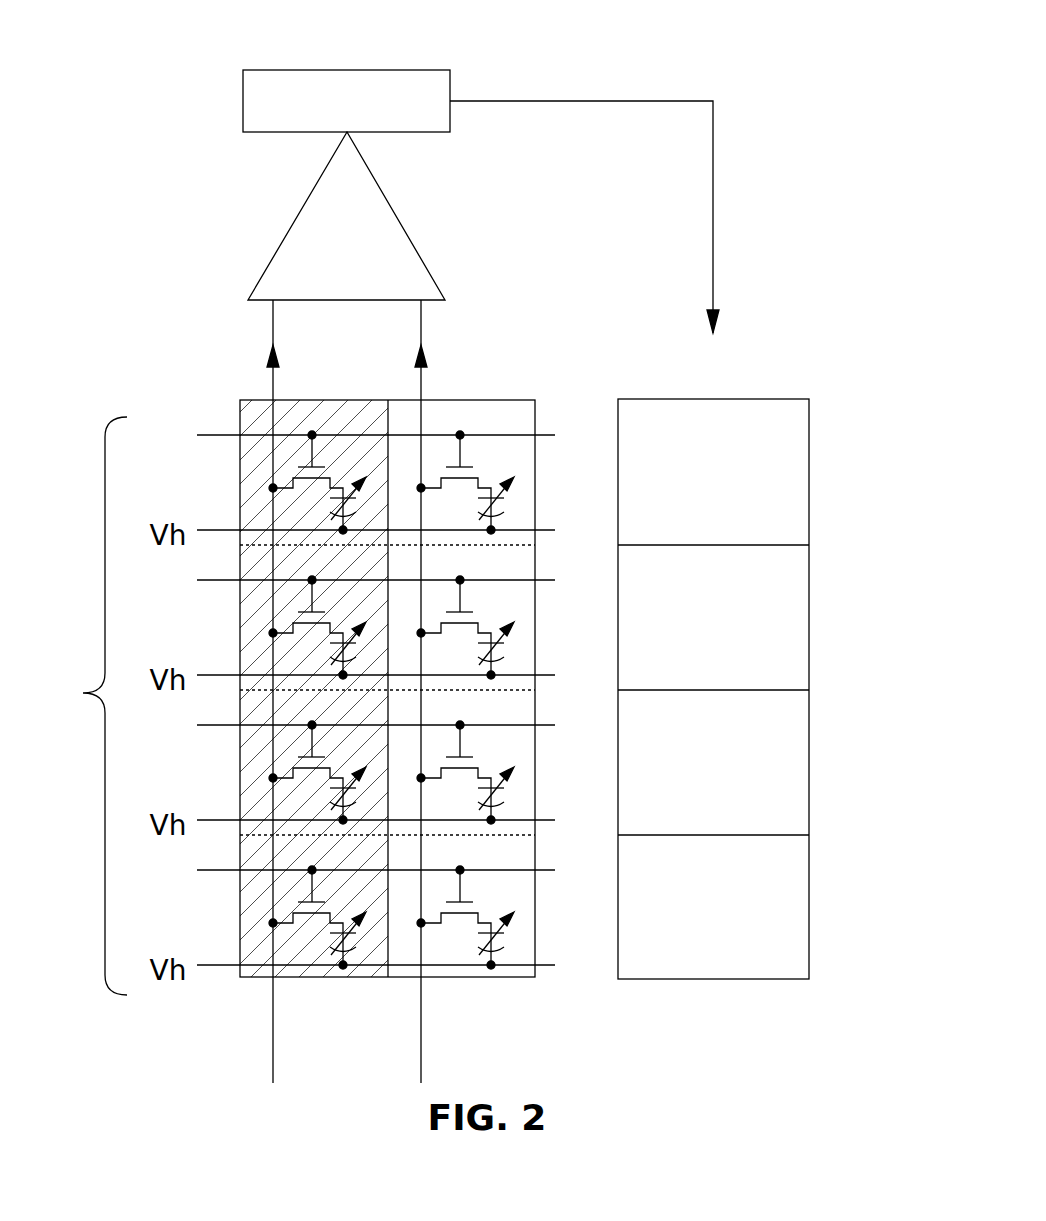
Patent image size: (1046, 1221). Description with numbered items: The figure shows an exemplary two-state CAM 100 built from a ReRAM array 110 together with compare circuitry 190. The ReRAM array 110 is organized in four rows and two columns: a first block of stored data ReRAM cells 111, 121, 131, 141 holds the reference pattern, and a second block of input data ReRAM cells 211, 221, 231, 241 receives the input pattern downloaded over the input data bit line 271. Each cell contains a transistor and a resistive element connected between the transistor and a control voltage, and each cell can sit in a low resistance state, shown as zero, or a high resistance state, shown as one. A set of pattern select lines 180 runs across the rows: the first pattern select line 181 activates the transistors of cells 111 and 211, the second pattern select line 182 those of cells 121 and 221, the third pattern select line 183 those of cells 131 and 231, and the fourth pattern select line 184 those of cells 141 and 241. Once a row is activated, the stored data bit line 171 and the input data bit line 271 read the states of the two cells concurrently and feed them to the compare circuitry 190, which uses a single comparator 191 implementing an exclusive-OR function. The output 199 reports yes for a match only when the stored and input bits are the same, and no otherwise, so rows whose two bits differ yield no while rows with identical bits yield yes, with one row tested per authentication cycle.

The two-state CAM 100 is at (768, 70).
The ReRAM array 110 is at (226, 396).
The stored data ReRAM cell 111 is at (257, 507).
The stored data ReRAM cell 121 is at (257, 652).
The stored data ReRAM cell 131 is at (257, 797).
The stored data ReRAM cell 141 is at (257, 942).
The stored data bit line 171 is at (273, 1020).
The pattern select lines 180 is at (82, 706).
The first pattern select line 181 is at (213, 438).
The second pattern select line 182 is at (213, 583).
The third pattern select line 183 is at (213, 728).
The fourth pattern select line 184 is at (213, 873).
The compare circuitry 190 is at (243, 100).
The comparator 191 is at (398, 210).
The output 199 is at (713, 210).
The input data ReRAM cell 211 is at (520, 490).
The input data ReRAM cell 221 is at (520, 635).
The input data ReRAM cell 231 is at (520, 780).
The input data ReRAM cell 241 is at (520, 925).
The input data bit line 271 is at (421, 1030).